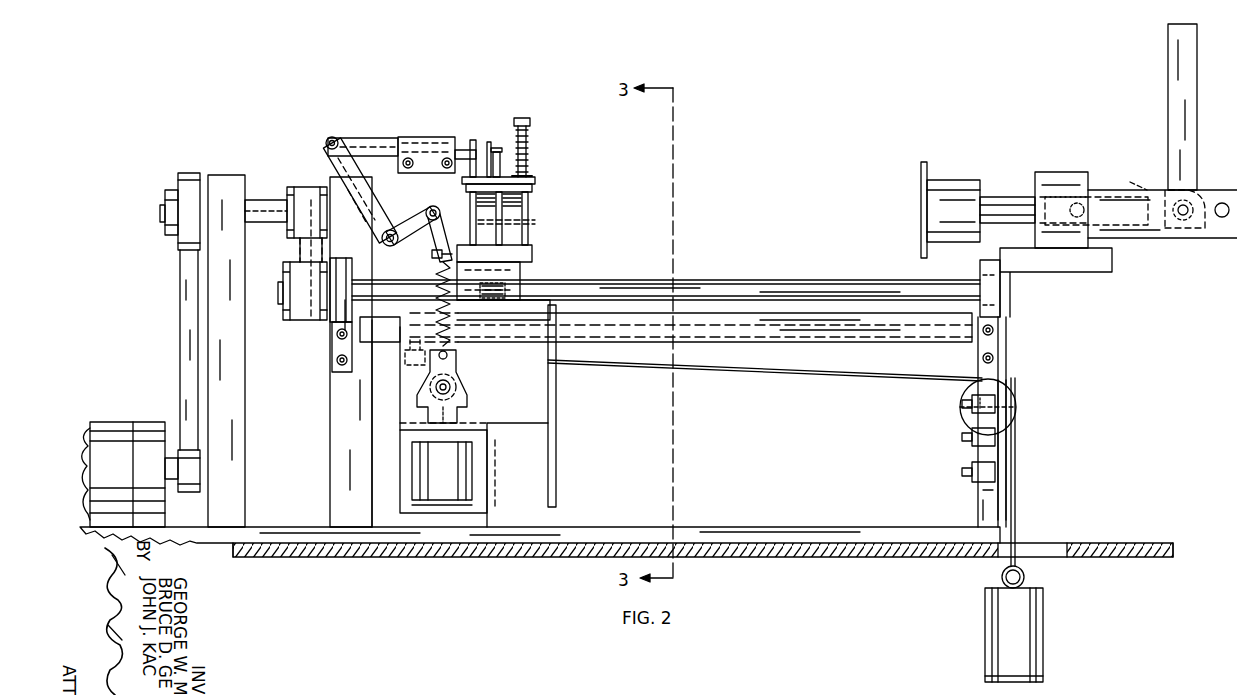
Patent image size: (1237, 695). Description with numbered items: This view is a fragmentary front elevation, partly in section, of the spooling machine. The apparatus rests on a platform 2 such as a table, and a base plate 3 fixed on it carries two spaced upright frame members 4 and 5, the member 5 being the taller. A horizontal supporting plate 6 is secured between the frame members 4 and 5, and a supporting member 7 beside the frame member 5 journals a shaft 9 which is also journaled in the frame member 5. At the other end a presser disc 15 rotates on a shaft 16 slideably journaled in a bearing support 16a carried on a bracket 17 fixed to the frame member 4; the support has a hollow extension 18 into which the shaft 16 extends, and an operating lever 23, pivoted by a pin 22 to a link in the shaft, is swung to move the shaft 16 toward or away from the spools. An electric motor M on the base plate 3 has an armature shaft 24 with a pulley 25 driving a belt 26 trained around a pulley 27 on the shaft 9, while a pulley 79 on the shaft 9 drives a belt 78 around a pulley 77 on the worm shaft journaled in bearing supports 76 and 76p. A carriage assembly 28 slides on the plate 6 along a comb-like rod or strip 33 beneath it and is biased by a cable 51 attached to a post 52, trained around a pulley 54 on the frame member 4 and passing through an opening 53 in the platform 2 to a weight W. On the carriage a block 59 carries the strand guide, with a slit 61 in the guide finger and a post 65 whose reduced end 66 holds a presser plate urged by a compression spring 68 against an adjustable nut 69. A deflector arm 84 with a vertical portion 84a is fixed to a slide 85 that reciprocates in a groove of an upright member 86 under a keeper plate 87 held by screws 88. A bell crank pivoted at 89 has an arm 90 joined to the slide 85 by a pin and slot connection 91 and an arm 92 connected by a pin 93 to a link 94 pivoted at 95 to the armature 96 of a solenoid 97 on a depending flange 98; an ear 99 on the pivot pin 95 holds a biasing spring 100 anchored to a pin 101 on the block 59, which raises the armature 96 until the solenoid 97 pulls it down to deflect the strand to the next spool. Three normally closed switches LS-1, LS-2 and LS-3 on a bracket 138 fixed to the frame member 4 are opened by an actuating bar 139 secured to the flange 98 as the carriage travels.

The platform 2 is at (895, 560).
The base plate 3 is at (748, 528).
The frame member 4 is at (1008, 500).
The frame member 5 is at (338, 410).
The horizontal supporting plate 6 is at (758, 320).
The supporting member 7 is at (240, 358).
The shaft 9 is at (262, 202).
The presser disc 15 is at (931, 170).
The shaft 16 is at (1012, 197).
The bearing support 16a is at (1060, 172).
The bracket 17 is at (1050, 272).
The hollow extension 18 is at (1155, 238).
The pin 22 is at (1170, 205).
The operating lever 23 is at (1186, 118).
The armature shaft 24 is at (200, 483).
The pulley 25 is at (200, 458).
The driving belt 26 is at (183, 350).
The pulley 27 is at (170, 188).
The carriage assembly 28 is at (516, 440).
The rod or strip 33 is at (832, 332).
The cable 51 is at (730, 372).
The post 52 is at (404, 358).
The opening 53 is at (1060, 540).
The pulley 54 is at (1010, 410).
The block 59 is at (510, 252).
The slit 61 is at (500, 150).
The post 65 is at (525, 197).
The reduced end 66 is at (530, 145).
The compression spring 68 is at (532, 172).
The adjustable nut 69 is at (525, 118).
The bearing support 76 is at (334, 318).
The bearing support 76p is at (978, 268).
The pulley 77 is at (298, 318).
The belt 78 is at (303, 253).
The pulley 79 is at (300, 185).
The deflector arm 84 is at (473, 140).
The vertical portion 84a is at (489, 142).
The slide 85 is at (384, 137).
The upright member 86 is at (446, 170).
The keeper plate 87 is at (432, 137).
The screws 88 is at (410, 170).
The pivot 89 is at (390, 248).
The arm 90 is at (358, 218).
The pin and slot connection 91 is at (336, 125).
The arm 92 is at (405, 226).
The pin 93 is at (441, 212).
The link 94 is at (444, 232).
The pivot pin 95 is at (451, 385).
The armature 96 is at (462, 400).
The solenoid 97 is at (458, 487).
The depending flange 98 is at (398, 417).
The ear 99 is at (450, 355).
The biasing spring 100 is at (452, 335).
The pin 101 is at (430, 254).
The bracket 138 is at (990, 455).
The actuating bar 139 is at (556, 440).
The switch LS-1 is at (950, 402).
The switch LS-2 is at (950, 434).
The switch LS-3 is at (950, 470).
The electric motor M is at (110, 430).
The weight W is at (1025, 622).